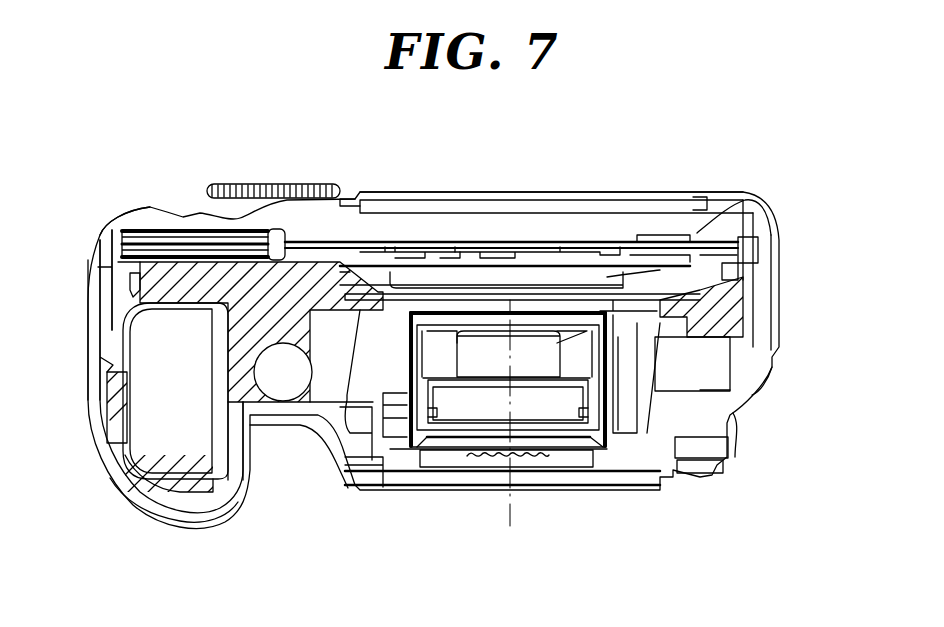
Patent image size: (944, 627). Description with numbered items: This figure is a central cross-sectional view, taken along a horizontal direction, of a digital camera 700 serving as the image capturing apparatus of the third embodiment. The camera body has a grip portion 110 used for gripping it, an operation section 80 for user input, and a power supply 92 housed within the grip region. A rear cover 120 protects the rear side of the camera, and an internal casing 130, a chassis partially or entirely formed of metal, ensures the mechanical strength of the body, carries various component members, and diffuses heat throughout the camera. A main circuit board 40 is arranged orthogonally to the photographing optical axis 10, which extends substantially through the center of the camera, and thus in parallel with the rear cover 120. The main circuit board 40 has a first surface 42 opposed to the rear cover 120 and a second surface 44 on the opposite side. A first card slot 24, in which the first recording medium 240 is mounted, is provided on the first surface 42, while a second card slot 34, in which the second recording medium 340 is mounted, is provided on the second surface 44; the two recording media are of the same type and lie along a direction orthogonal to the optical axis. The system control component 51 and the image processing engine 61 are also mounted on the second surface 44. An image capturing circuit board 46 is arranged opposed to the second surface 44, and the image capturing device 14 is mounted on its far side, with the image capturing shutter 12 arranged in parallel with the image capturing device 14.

The digital camera 700 is at (800, 195).
The photographing optical axis 10 is at (513, 517).
The image capturing shutter 12 is at (630, 303).
The image capturing device 14 is at (600, 277).
The first card slot 24 is at (202, 227).
The second card slot 34 is at (150, 286).
The main circuit board 40 is at (690, 241).
The first surface 42 is at (697, 233).
The second surface 44 is at (693, 246).
The image capturing circuit board 46 is at (583, 267).
The system control component 51 is at (500, 247).
The image processing engine 61 is at (398, 247).
The operation section 80 is at (277, 184).
The power supply 92 is at (175, 432).
The grip portion 110 is at (175, 520).
The rear cover 120 is at (350, 198).
The internal casing 130 is at (712, 332).
The first recording medium 240 is at (120, 235).
The second recording medium 340 is at (118, 252).